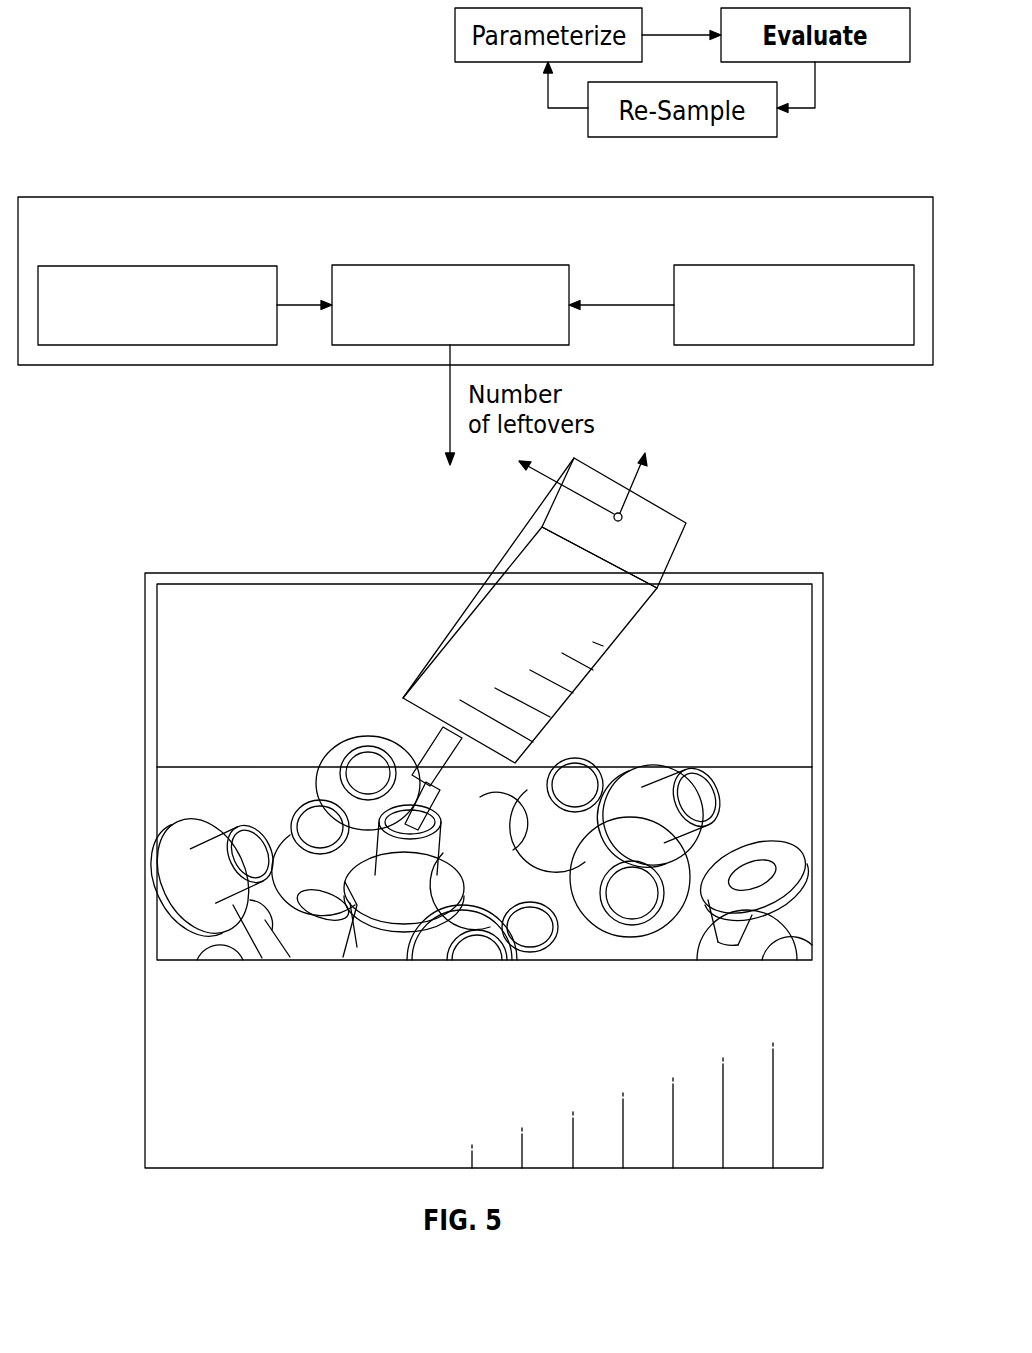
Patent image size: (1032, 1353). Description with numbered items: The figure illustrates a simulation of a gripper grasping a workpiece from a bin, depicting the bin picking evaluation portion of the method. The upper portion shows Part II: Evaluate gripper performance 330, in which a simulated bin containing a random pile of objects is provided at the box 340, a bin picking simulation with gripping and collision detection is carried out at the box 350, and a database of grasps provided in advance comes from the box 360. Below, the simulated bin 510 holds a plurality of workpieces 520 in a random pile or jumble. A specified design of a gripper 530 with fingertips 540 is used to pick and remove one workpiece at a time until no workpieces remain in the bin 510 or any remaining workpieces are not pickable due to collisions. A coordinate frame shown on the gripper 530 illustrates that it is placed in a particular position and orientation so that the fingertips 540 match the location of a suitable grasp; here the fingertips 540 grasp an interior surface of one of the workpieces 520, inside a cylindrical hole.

The Part II: Evaluate gripper performance 330 is at (84, 197).
The simulated bin of random objects 340 is at (105, 266).
The gripping and collision detection simulation 350 is at (398, 266).
The grasp database 360 is at (848, 266).
The bin 510 is at (826, 852).
The workpieces 520 is at (733, 843).
The gripper 530 is at (597, 667).
The fingertips 540 is at (416, 737).